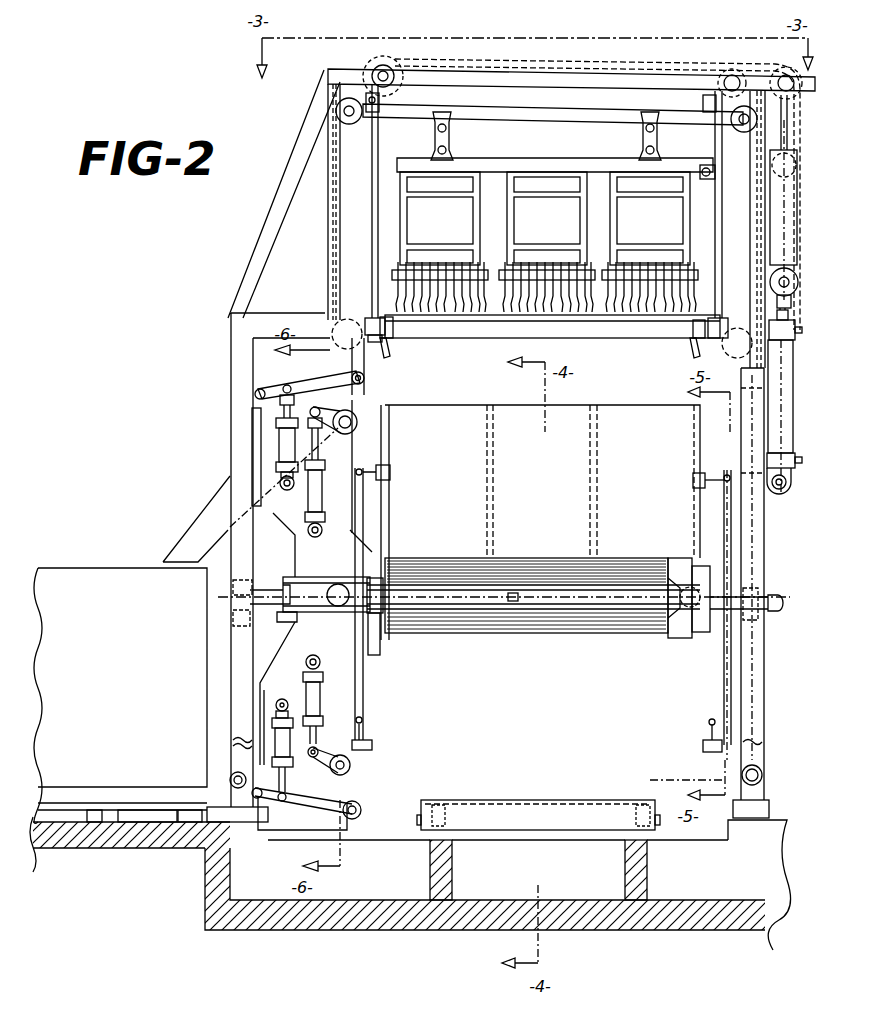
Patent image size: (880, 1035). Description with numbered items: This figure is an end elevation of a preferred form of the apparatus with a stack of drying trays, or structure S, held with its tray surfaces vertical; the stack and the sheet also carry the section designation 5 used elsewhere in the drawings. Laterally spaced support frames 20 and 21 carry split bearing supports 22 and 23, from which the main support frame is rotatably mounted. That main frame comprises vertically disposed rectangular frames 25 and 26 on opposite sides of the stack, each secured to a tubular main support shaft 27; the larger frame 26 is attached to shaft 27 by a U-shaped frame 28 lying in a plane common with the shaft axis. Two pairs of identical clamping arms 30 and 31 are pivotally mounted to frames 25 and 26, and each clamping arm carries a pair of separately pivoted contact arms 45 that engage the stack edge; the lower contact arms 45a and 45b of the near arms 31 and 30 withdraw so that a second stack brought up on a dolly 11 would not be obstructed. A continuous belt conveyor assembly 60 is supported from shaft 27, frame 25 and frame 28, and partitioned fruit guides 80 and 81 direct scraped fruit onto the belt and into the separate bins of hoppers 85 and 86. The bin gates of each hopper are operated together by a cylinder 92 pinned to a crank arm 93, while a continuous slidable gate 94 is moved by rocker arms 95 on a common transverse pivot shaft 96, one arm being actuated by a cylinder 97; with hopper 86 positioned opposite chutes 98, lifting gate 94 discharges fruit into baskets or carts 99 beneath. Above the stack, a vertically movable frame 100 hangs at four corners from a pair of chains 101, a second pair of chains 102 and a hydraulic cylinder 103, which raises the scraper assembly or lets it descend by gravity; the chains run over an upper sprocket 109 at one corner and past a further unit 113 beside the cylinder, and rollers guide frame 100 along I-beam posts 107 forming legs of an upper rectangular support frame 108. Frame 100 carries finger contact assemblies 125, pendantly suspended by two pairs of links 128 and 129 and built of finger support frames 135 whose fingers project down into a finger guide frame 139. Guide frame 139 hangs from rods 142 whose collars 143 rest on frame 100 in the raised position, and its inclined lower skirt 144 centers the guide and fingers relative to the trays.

The frame section 5 is at (612, 418).
The dolly 11 is at (523, 800).
The support frame 20 is at (240, 420).
The support frame 21 is at (765, 752).
The split bearing support 22 is at (252, 615).
The split bearing support 23 is at (760, 588).
The rectangular frame 25 is at (690, 638).
The rectangular frame 26 is at (380, 652).
The tubular main support shaft 27 is at (260, 584).
The U-shaped frame 28 is at (333, 564).
The clamping arms 30 is at (729, 478).
The clamping arms 31 is at (362, 468).
The contact arms 45 is at (390, 473).
The lower contact arm 45a is at (372, 745).
The lower contact arm 45b is at (703, 747).
The continuous belt conveyor assembly 60 is at (571, 620).
The partitioned fruit guide 80 is at (545, 558).
The partitioned fruit guide 81 is at (501, 638).
The hopper 85 is at (354, 797).
The hopper 86 is at (367, 399).
The cylinder 92 is at (322, 486).
The crank arm 93 is at (324, 771).
The continuous slidable gate 94 is at (255, 478).
The rocker arms 95 is at (305, 384).
The transverse pivot shaft 96 is at (364, 380).
The cylinder 97 is at (284, 440).
The chutes 98 is at (205, 525).
The baskets or carts 99 is at (92, 725).
The vertically movable frame 100 is at (578, 112).
The chains 101 is at (548, 60).
The chains 102 is at (797, 133).
The hydraulic cylinder 103 is at (777, 347).
The I-beam post 107 is at (330, 250).
The upper rectangular support frame 108 is at (525, 80).
The sprocket 109 is at (390, 60).
The cylinder 113 is at (782, 266).
The finger contact assemblies 125 is at (562, 148).
The links 128 is at (436, 145).
The links 129 is at (645, 147).
The finger support frames 135 is at (462, 236).
The finger guide frame 139 is at (469, 345).
The rods 142 is at (372, 258).
The collars 143 is at (385, 108).
The inclined lower skirt 144 is at (403, 345).